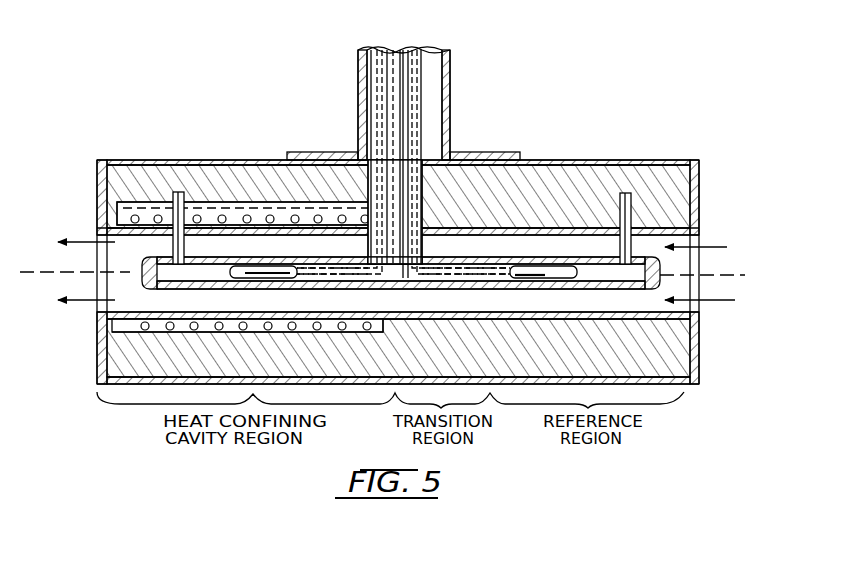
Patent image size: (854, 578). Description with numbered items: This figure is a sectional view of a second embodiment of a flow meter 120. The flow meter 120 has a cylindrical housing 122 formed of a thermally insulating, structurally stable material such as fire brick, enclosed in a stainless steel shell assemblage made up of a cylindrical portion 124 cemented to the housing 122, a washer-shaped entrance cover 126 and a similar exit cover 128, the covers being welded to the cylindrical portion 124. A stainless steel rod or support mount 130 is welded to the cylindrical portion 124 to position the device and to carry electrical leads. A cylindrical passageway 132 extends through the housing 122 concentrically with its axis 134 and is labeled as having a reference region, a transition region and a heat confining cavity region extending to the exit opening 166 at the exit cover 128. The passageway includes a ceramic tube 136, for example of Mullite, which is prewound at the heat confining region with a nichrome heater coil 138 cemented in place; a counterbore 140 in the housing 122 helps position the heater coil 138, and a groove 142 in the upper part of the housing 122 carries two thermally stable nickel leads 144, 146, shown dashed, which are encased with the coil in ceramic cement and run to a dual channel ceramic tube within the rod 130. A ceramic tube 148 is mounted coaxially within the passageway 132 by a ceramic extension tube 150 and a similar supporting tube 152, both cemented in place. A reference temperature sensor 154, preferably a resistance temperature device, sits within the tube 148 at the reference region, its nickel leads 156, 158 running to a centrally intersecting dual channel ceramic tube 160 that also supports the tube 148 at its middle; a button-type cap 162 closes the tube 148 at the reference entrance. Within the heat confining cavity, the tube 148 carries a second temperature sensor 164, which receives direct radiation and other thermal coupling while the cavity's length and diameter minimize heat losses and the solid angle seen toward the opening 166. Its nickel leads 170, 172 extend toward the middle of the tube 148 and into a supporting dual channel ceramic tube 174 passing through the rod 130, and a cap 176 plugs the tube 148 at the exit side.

The flow meter 120 is at (678, 60).
The cylindrical housing 122 is at (643, 185).
The cylindrical portion 124 is at (691, 386).
The entrance cover 126 is at (699, 352).
The exit cover 128 is at (97, 212).
The support mount 130 is at (447, 63).
The cylindrical passageway 132 is at (522, 246).
The axis 134 is at (44, 270).
The ceramic tube 136 is at (700, 238).
The heater coil 138 is at (128, 355).
The counterbore 140 is at (143, 328).
The groove 142 is at (148, 202).
The lead 144 is at (228, 206).
The lead 146 is at (368, 236).
The ceramic tube 148 is at (370, 65).
The ceramic tube extension 150 is at (620, 244).
The supporting tube 152 is at (185, 244).
The reference temperature sensor 154 is at (530, 282).
The lead 156 is at (418, 121).
The lead 158 is at (412, 100).
The dual channel ceramic tube 160 is at (428, 58).
The button-type cap 162 is at (660, 276).
The temperature sensor 164 is at (262, 278).
The exit opening 166 is at (97, 290).
The lead 170 is at (405, 133).
The lead 172 is at (398, 110).
The dual channel ceramic tube 174 is at (390, 88).
The cap 176 is at (142, 271).